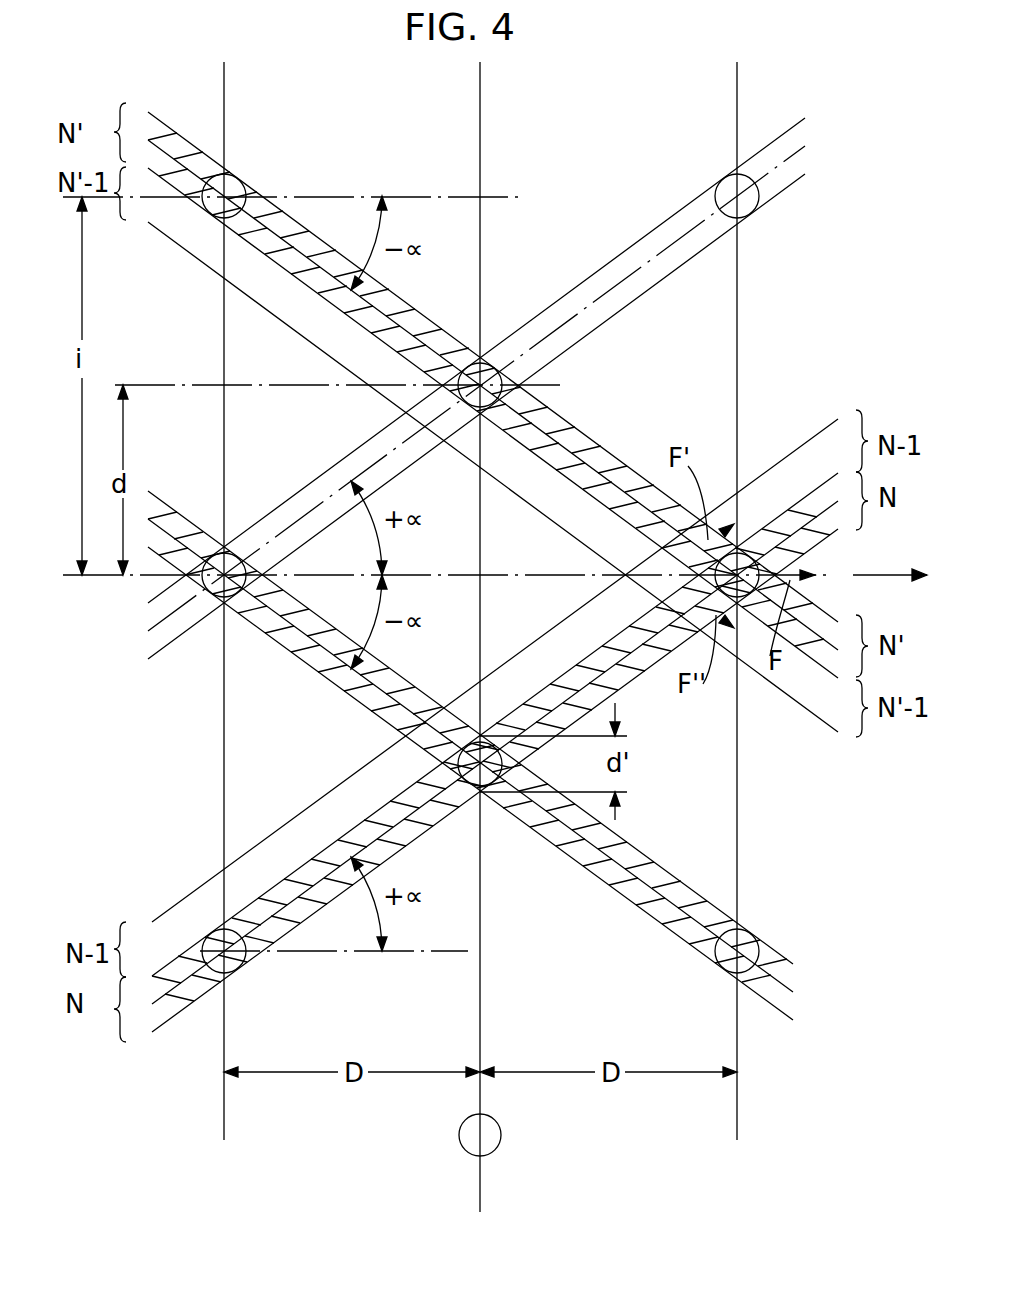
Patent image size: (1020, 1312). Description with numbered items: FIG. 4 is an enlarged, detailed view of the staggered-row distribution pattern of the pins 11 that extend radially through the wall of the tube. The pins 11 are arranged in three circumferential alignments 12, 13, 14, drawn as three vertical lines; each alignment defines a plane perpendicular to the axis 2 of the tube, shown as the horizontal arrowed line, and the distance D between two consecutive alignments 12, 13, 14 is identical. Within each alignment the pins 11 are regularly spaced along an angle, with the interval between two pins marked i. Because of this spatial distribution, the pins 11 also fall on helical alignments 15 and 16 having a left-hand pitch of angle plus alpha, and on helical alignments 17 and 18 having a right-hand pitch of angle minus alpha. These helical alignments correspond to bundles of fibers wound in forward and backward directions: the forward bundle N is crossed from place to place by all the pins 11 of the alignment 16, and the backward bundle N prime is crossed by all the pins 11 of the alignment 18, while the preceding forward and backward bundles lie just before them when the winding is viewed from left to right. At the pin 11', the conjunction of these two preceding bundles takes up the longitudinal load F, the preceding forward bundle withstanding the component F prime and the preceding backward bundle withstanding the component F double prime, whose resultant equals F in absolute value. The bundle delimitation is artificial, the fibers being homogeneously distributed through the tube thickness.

The axis of the tube 2 is at (858, 578).
The pins 11 is at (458, 665).
The pin 11' is at (755, 538).
The circumferential alignment 12 is at (226, 1092).
The circumferential alignment 13 is at (482, 1182).
The circumferential alignment 14 is at (739, 1092).
The helical alignment 15 is at (333, 493).
The helical alignment 16 is at (406, 812).
The helical alignment 17 is at (310, 667).
The helical alignment 18 is at (620, 462).